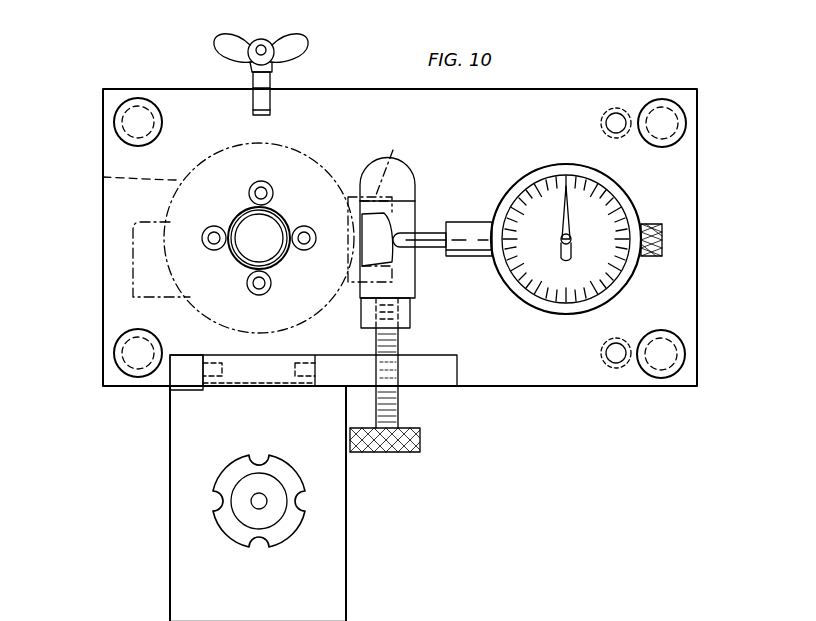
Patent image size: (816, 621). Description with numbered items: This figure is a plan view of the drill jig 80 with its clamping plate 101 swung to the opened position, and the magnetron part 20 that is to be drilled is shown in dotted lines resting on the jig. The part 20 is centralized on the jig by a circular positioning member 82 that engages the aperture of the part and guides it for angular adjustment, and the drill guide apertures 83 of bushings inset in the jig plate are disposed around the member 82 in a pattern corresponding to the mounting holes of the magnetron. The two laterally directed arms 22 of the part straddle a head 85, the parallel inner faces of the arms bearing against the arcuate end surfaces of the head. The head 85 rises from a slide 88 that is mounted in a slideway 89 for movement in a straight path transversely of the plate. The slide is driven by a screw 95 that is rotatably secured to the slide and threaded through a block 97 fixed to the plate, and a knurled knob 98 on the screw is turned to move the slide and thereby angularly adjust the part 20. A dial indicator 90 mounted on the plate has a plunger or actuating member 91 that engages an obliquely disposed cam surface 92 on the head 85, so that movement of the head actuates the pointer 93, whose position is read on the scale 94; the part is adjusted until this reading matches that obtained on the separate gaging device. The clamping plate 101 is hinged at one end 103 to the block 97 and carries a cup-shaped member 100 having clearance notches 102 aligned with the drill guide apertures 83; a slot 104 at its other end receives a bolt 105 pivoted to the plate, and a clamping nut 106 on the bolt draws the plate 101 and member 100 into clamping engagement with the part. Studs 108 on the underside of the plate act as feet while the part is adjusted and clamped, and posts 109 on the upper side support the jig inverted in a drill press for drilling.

The drill jig 80 is at (82, 104).
The magnetron component or part 20 is at (103, 178).
The laterally directed arms 22 is at (345, 318).
The circular positioning member 82 is at (250, 226).
The drill guide apertures 83 is at (304, 234).
The head 85 is at (390, 214).
The slide 88 is at (420, 288).
The slideway 89 is at (412, 340).
The dial indicator 90 is at (556, 318).
The plunger or actuating member 91 is at (428, 250).
The cam surface 92 is at (392, 228).
The pointer 93 is at (568, 202).
The scale 94 is at (576, 234).
The screw 95 is at (400, 418).
The block 97 is at (428, 392).
The knurled knob 98 is at (420, 450).
The cup-shaped member 100 is at (300, 532).
The clamping plate 101 is at (346, 576).
The clearance notches 102 is at (306, 496).
The hinged end 103 is at (176, 378).
The slot 104 is at (258, 611).
The bolt 105 is at (272, 80).
The clamping nut 106 is at (264, 39).
The studs 108 is at (618, 108).
The posts 109 is at (138, 99).